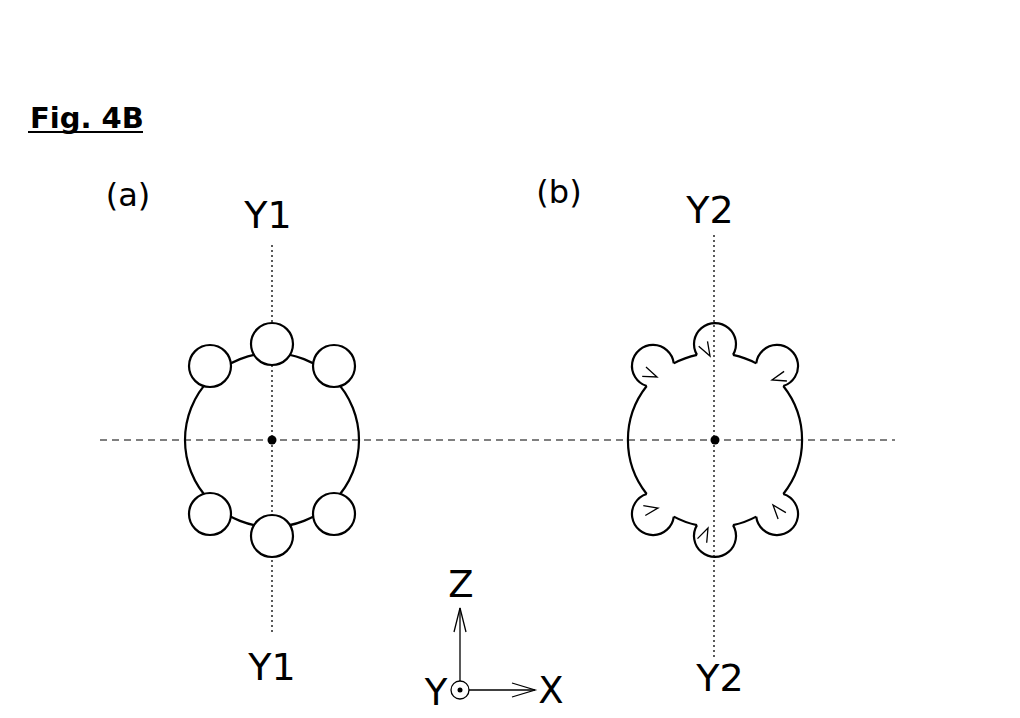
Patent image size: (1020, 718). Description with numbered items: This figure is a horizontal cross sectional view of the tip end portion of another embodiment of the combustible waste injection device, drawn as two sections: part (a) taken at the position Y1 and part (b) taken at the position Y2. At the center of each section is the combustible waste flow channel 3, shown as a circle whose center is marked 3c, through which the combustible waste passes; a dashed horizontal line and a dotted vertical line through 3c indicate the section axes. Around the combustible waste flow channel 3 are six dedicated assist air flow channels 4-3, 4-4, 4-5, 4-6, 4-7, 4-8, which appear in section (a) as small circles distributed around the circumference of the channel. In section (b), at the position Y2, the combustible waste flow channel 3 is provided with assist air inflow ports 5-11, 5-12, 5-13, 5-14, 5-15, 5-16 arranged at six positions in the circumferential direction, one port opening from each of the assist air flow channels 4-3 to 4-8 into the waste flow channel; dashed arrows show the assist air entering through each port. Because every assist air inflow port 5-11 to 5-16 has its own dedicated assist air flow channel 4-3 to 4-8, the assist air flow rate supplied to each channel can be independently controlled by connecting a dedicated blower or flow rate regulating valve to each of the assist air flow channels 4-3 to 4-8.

The combustible waste flow channel 3 is at (203, 428).
The center of core member 3c is at (494, 458).
The assist air flow channel 4-3 is at (287, 323).
The assist air flow channel 4-4 is at (355, 353).
The assist air flow channel 4-5 is at (357, 510).
The assist air flow channel 4-6 is at (287, 550).
The assist air flow channel 4-7 is at (205, 535).
The assist air flow channel 4-8 is at (195, 353).
The assist air inflow port 5-11 is at (703, 344).
The assist air inflow port 5-12 is at (786, 376).
The assist air inflow port 5-13 is at (782, 516).
The assist air inflow port 5-14 is at (702, 541).
The assist air inflow port 5-15 is at (644, 511).
The assist air inflow port 5-16 is at (644, 372).